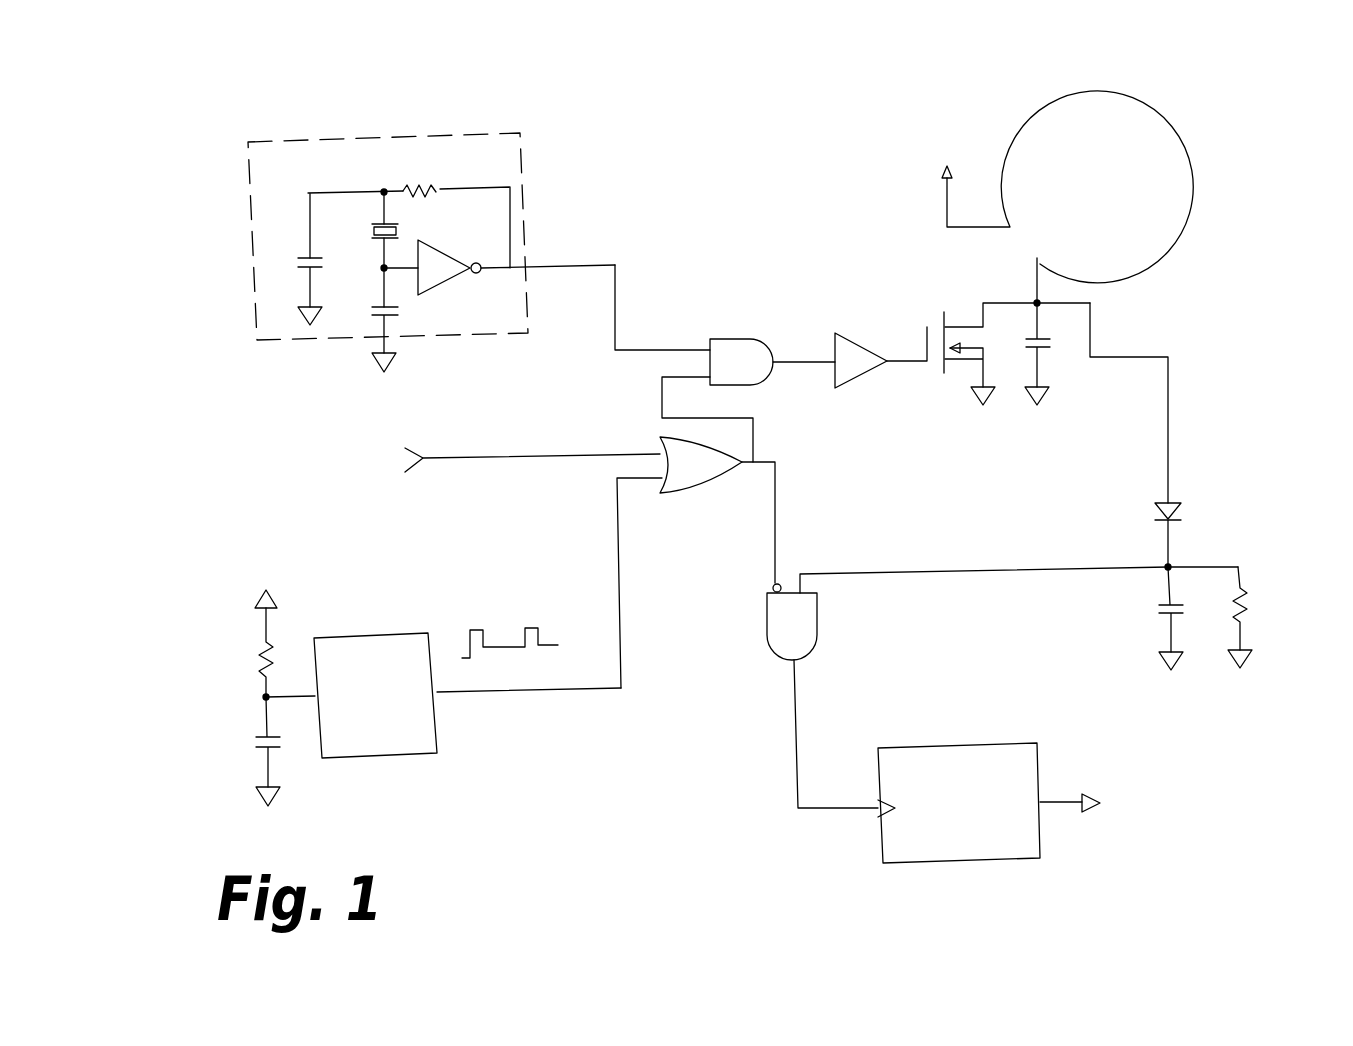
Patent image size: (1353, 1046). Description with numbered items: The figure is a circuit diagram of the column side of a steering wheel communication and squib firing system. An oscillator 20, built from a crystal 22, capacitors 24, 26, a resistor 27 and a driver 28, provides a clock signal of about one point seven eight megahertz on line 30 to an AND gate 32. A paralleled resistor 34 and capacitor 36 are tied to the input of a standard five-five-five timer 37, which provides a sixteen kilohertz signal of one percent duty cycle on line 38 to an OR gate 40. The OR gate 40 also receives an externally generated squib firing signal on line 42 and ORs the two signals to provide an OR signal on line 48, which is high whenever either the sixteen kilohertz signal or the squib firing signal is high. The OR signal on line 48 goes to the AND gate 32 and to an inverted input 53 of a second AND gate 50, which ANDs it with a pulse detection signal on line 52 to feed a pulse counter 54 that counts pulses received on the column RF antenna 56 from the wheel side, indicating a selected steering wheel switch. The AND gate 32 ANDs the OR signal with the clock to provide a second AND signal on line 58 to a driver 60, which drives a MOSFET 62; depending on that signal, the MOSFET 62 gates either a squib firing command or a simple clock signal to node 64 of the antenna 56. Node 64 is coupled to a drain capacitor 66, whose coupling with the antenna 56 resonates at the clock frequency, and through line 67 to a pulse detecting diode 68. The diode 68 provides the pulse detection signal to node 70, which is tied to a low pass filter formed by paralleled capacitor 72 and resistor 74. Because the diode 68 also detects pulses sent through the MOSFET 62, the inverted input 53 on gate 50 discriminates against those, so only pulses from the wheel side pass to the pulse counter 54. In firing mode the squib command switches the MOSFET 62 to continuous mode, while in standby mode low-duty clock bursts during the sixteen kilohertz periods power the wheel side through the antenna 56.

The oscillator 20 is at (250, 193).
The crystal 22 is at (373, 225).
The capacitor 24 is at (307, 257).
The capacitor 26 is at (383, 318).
The resistor 27 is at (440, 189).
The driver 28 is at (453, 257).
The line 30 is at (615, 298).
The AND gate 32 is at (730, 338).
The resistor 34 is at (260, 655).
The capacitor 36 is at (268, 737).
The timer 37 is at (400, 633).
The line 38 is at (625, 650).
The OR gate 40 is at (662, 422).
The line 42 is at (533, 455).
The line 48 is at (757, 433).
The AND gate 50 is at (767, 642).
The line 52 is at (956, 572).
The inverted input 53 is at (777, 585).
The pulse counter 54 is at (998, 742).
The RF antenna 56 is at (1128, 277).
The line 58 is at (802, 360).
The driver 60 is at (870, 333).
The MOSFET 62 is at (927, 327).
The node 64 is at (1035, 302).
The drain capacitor 66 is at (1043, 348).
The line 67 is at (1183, 440).
The pulse detecting diode 68 is at (1167, 520).
The node 70 is at (1167, 570).
The capacitor 72 is at (1180, 617).
The resistor 74 is at (1247, 620).